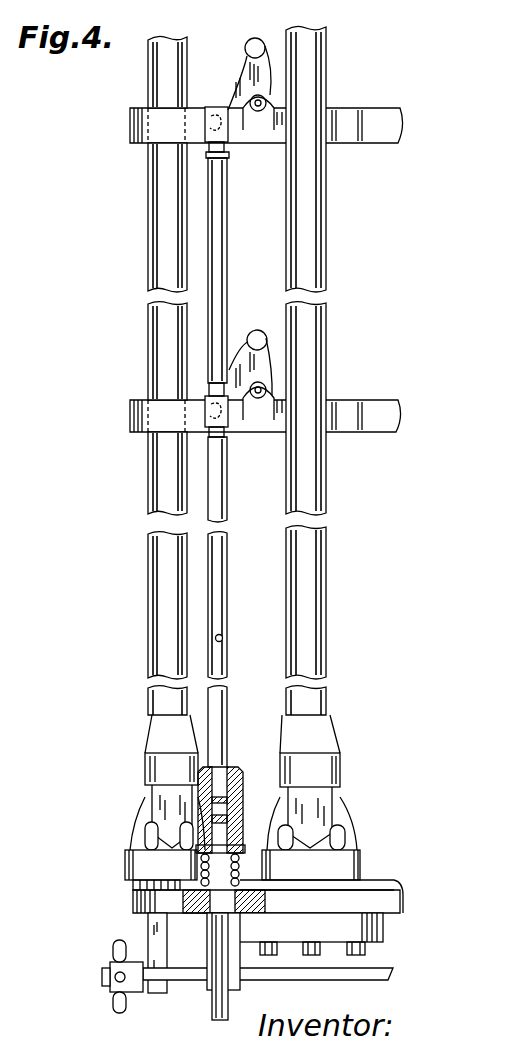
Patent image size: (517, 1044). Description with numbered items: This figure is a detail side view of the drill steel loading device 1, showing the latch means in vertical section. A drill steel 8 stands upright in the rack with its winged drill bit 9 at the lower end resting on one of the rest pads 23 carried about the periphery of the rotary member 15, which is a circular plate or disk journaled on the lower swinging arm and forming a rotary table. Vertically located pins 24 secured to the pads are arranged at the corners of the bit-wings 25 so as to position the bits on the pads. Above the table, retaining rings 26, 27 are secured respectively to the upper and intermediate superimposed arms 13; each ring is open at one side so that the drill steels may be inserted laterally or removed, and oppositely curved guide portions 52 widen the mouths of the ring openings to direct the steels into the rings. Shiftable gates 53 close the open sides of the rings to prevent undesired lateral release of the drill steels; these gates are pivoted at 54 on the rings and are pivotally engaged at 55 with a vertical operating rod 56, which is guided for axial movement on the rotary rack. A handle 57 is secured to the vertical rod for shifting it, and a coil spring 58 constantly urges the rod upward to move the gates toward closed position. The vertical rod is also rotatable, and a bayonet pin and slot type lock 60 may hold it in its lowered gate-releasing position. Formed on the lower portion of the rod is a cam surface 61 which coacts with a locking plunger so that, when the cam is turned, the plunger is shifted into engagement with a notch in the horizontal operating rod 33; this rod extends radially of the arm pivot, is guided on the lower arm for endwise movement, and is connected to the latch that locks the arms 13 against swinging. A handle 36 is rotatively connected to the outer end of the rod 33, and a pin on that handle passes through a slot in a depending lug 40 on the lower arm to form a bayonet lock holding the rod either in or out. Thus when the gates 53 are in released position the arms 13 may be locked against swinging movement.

The drill steel loading device 1 is at (146, 701).
The drill steel 8 is at (300, 563).
The winged drill bit 9 is at (142, 810).
The superimposed arms 13 is at (386, 128).
The rotary member 15 is at (377, 888).
The rest pads 23 is at (133, 877).
The pins 24 is at (152, 848).
The bit-wings 25 is at (170, 810).
The upper retaining ring 26 is at (130, 119).
The intermediate retaining ring 27 is at (130, 417).
The horizontal operating rod 33 is at (337, 971).
The handle 36 is at (113, 988).
The depending lug 40 is at (160, 957).
The curved guide portions 52 is at (353, 118).
The gates 53 is at (266, 42).
The gate pivot 54 is at (262, 112).
The pivotal engagement 55 is at (216, 105).
The vertical operating rod 56 is at (224, 260).
The handle 57 is at (224, 636).
The coil spring 58 is at (247, 850).
The bayonet pin and slot type lock 60 is at (232, 796).
The cam surface 61 is at (231, 1010).